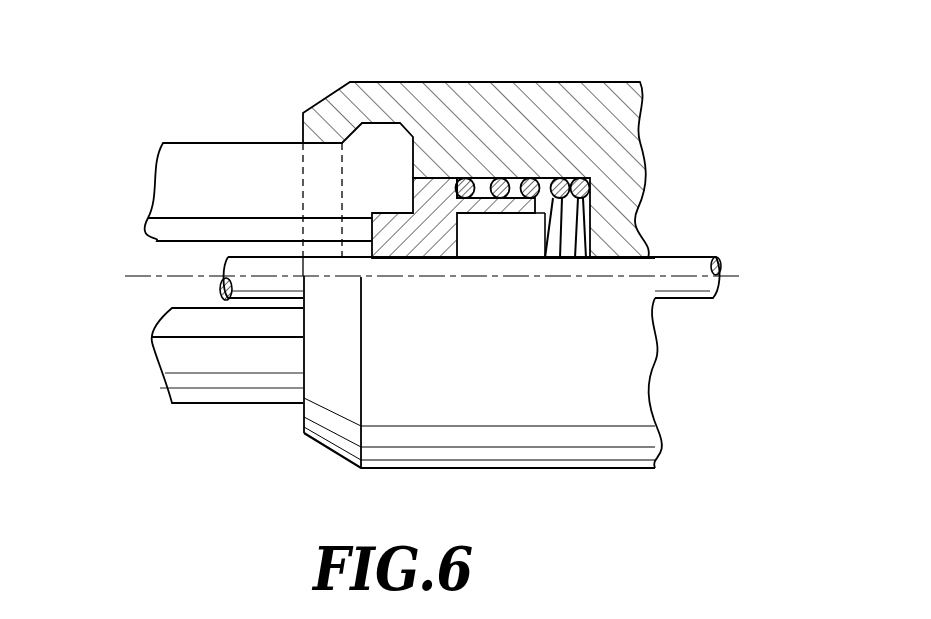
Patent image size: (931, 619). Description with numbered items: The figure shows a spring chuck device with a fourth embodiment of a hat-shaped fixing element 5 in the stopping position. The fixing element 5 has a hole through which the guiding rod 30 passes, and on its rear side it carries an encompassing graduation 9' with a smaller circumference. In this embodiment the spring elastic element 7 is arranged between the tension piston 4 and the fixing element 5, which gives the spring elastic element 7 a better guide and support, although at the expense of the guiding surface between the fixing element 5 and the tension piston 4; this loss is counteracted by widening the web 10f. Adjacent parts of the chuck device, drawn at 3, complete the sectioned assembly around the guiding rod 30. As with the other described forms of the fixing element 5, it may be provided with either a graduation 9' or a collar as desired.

The pipe / tube 3 is at (180, 351).
The tension piston 4 is at (542, 110).
The hat-shaped fixing element 5 is at (410, 245).
The spring elastic element 7 is at (502, 186).
The graduation 9' is at (639, 223).
The web 10f is at (442, 178).
The guiding rod 30 is at (683, 283).